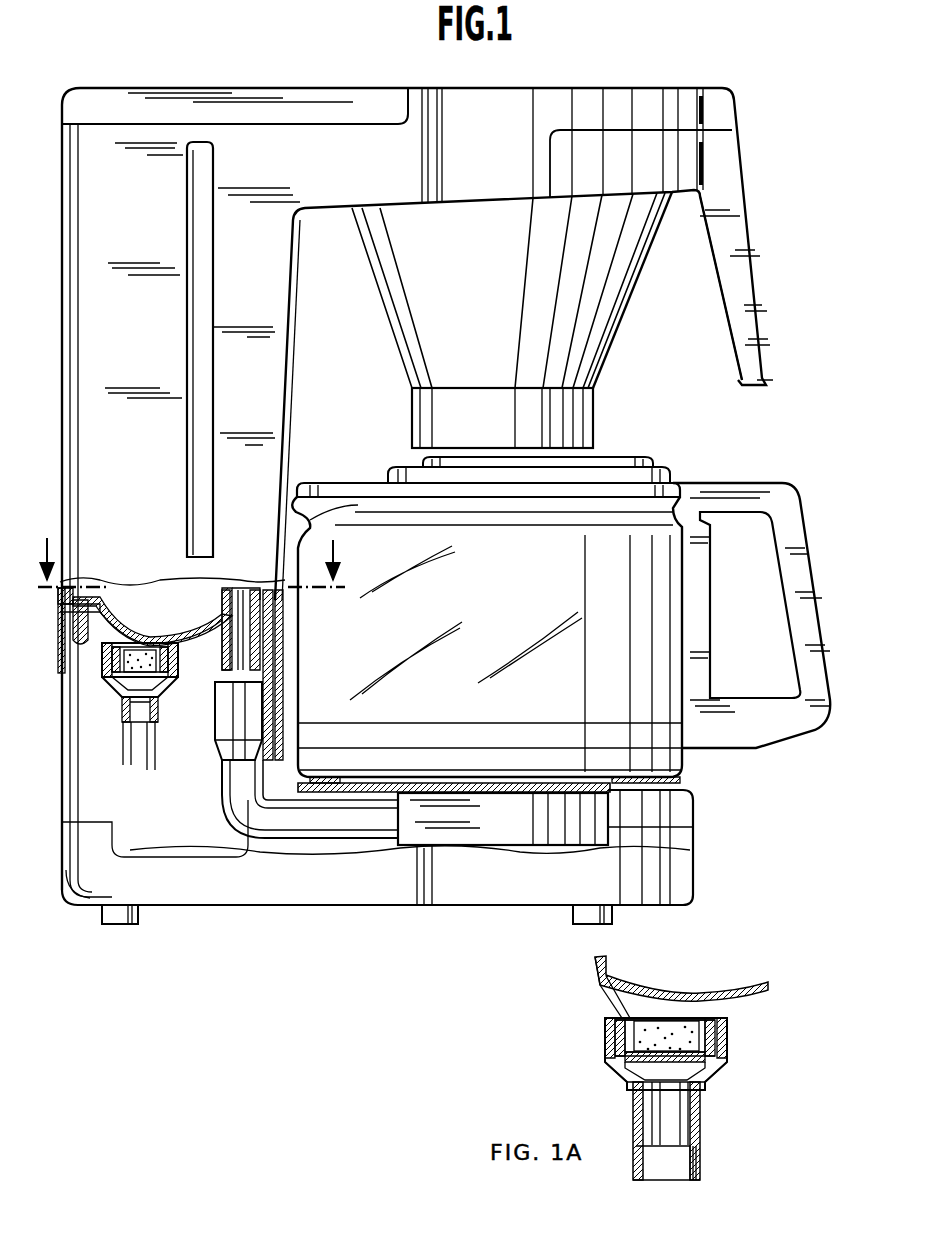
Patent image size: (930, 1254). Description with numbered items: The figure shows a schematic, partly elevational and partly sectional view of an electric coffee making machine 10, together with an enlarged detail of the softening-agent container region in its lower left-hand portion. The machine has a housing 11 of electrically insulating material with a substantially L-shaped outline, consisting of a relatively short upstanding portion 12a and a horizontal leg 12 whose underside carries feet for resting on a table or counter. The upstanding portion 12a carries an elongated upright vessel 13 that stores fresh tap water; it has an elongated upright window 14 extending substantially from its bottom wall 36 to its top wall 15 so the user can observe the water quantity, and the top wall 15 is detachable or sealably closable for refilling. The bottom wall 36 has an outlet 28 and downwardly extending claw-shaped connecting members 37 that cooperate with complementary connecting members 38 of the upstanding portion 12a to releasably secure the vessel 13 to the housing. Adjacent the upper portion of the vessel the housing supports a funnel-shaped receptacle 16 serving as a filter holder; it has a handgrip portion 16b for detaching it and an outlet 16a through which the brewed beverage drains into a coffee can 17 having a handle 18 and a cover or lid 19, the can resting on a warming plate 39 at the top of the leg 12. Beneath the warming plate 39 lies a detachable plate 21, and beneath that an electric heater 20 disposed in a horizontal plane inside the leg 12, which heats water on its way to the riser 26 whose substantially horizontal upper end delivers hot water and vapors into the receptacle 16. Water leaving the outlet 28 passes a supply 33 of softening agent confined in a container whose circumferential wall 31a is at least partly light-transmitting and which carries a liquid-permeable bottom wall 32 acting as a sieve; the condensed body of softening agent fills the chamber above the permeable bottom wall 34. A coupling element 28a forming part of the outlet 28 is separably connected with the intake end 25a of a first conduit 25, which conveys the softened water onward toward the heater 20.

In FIG. 1, the machine 10 is at (206, 74).
In FIG. 1, the housing 11 is at (56, 800).
In FIG. 1, the horizontal portion or leg 12 is at (269, 910).
In FIG. 1, the upstanding portion 12a is at (90, 800).
In FIG. 1, the vessel 13 is at (292, 348).
In FIG. 1A, the vessel 13 is at (590, 983).
In FIG. 1, the window 14 is at (200, 290).
In FIG. 1, the top wall 15 is at (314, 85).
In FIG. 1, the funnel-shaped receptacle 16 is at (618, 352).
In FIG. 1, the outlet 16a is at (437, 425).
In FIG. 1, the handgrip portion 16b is at (726, 254).
In FIG. 1, the coffee can 17 is at (702, 470).
In FIG. 1, the handle 18 is at (774, 482).
In FIG. 1, the cover or lid 19 is at (610, 462).
In FIG. 1, the electric heater 20 is at (487, 825).
In FIG. 1, the detachable plate 21 is at (530, 800).
In FIG. 1, the first conduit 25 is at (165, 725).
In FIG. 1A, the first conduit 25 is at (700, 1128).
In FIG. 1, the intake end 25a is at (120, 695).
In FIG. 1A, the intake end 25a is at (726, 1058).
In FIG. 1, the riser 26 is at (268, 628).
In FIG. 1, the outlet 28 is at (152, 645).
In FIG. 1A, the outlet 28 is at (664, 1006).
In FIG. 1, the coupling element 28a is at (110, 648).
In FIG. 1A, the coupling element 28a is at (606, 1042).
In FIG. 1A, the circumferential wall 31a is at (628, 1022).
In FIG. 1A, the bottom wall 32 is at (710, 990).
In FIG. 1, the supply of softening agent 33 is at (140, 650).
In FIG. 1A, the supply of softening agent 33 is at (698, 1030).
In FIG. 1, the permeable bottom wall 34 is at (146, 690).
In FIG. 1A, the permeable bottom wall 34 is at (690, 1072).
In FIG. 1, the bottom wall 36 is at (172, 628).
In FIG. 1A, the bottom wall 36 is at (736, 1000).
In FIG. 1, the claw-shaped connecting members 37 is at (82, 612).
In FIG. 1, the complementary connecting members 38 is at (66, 610).
In FIG. 1, the warming plate 39 is at (616, 770).